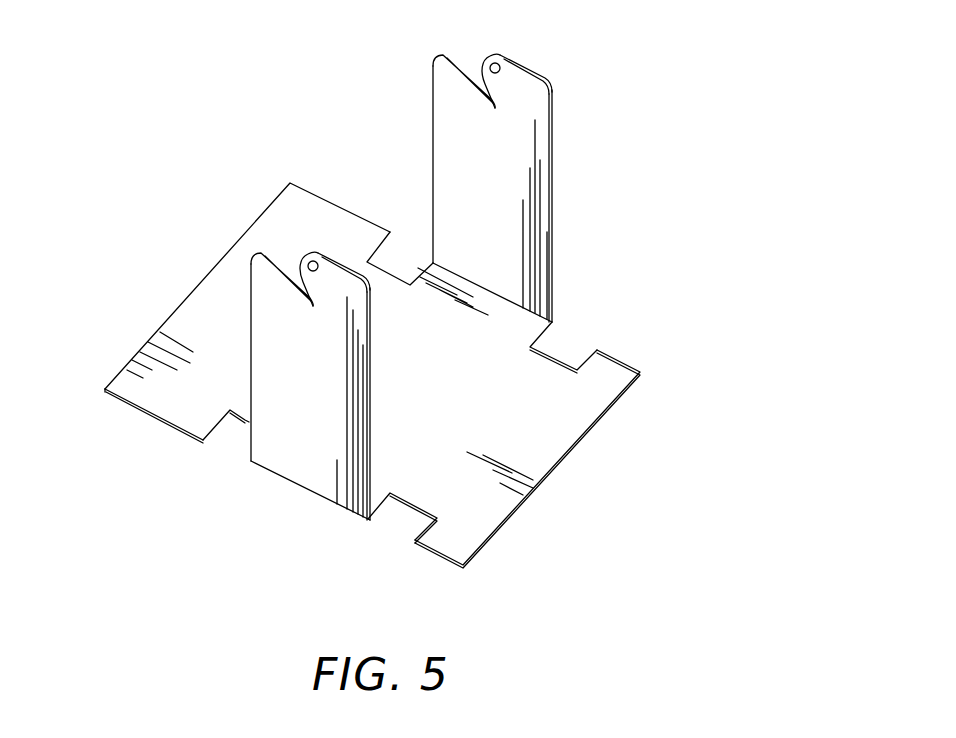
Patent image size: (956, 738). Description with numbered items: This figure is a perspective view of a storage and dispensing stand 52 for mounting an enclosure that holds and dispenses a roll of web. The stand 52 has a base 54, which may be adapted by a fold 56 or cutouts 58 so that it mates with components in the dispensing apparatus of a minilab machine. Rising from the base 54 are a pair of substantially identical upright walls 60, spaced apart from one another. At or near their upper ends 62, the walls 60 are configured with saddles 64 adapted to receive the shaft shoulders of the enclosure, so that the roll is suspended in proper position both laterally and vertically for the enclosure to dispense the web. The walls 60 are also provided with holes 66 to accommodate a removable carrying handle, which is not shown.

The storage and dispensing stand 52 is at (261, 128).
The base 54 is at (535, 450).
The fold 56 is at (113, 394).
The cutouts 58 is at (229, 428).
The upright walls 60 is at (326, 450).
The upper ends 62 is at (337, 260).
The saddles 64 is at (315, 300).
The holes 66 is at (308, 264).